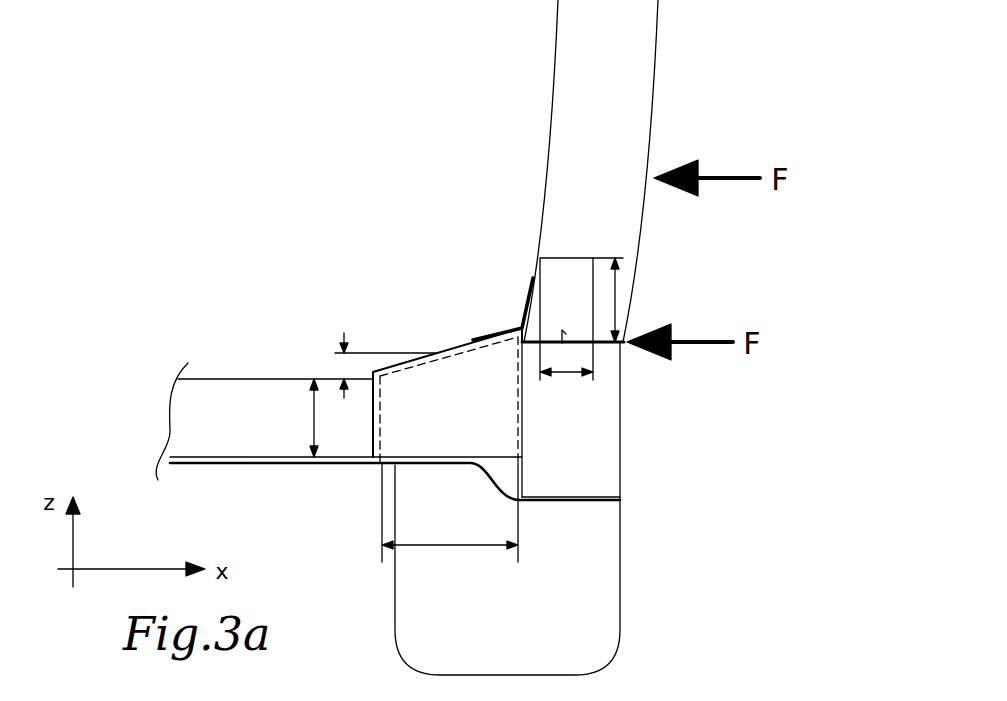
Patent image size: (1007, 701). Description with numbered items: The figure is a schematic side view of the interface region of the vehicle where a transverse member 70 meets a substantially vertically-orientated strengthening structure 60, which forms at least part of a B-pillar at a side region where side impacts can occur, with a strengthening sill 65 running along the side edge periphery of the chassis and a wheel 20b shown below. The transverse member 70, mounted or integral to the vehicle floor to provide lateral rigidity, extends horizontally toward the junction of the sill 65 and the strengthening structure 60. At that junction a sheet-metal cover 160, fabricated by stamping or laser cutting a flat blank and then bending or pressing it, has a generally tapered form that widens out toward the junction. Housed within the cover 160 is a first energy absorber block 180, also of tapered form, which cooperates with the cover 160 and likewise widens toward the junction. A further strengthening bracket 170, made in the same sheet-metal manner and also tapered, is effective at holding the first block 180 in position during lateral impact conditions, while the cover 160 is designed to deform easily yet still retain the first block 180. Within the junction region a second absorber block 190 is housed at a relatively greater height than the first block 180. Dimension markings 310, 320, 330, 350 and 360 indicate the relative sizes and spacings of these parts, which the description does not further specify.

The strengthening structure 60 is at (627, 103).
The transverse member 70 is at (225, 397).
The strengthening sill 65 is at (587, 458).
The wheel 20b is at (573, 577).
The second absorber block 190 is at (565, 272).
The strengthening bracket 170 is at (523, 322).
The cover 160 is at (438, 350).
The first energy absorber block 180 is at (478, 367).
The gap dimension 310 is at (340, 365).
The spacer length dimension 320 is at (432, 543).
The beam height dimension 330 is at (314, 405).
The block height dimension 350 is at (618, 272).
The block width dimension 360 is at (572, 374).